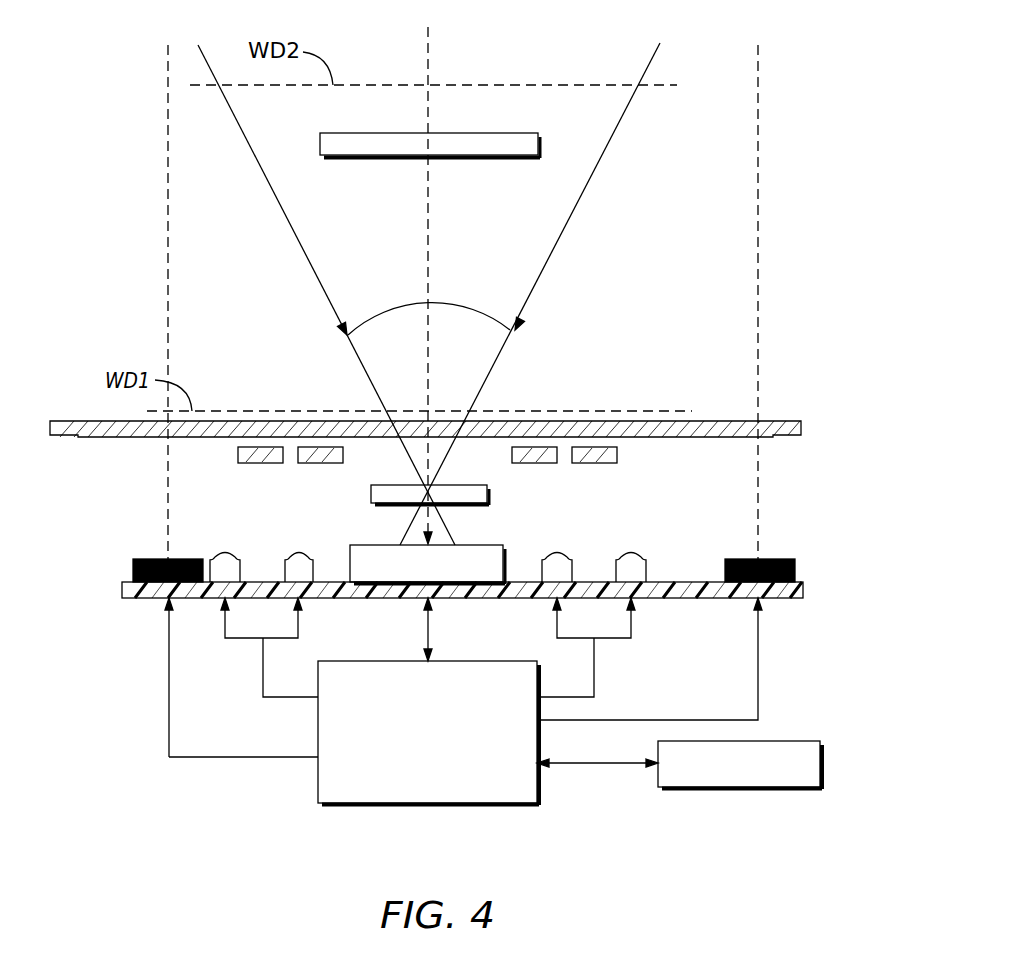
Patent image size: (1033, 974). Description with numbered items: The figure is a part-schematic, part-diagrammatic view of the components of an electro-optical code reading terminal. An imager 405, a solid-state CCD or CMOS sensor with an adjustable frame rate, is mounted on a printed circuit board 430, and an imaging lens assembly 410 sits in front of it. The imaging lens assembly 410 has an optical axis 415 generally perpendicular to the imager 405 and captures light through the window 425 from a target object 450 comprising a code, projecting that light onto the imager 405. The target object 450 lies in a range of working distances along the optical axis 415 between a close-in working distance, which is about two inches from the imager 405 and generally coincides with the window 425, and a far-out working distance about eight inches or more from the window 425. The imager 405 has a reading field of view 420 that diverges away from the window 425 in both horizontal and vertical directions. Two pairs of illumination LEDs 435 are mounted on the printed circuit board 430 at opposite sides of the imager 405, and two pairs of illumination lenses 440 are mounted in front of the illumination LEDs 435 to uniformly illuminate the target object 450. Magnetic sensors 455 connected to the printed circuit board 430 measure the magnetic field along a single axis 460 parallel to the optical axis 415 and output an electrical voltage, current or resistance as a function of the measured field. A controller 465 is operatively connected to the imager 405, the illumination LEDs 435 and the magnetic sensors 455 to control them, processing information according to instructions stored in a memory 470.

The imager 405 is at (386, 545).
The imaging lens assembly 410 is at (413, 485).
The optical axis 415 is at (428, 44).
The reading field of view 420 is at (468, 302).
The window 425 is at (68, 421).
The printed circuit board 430 is at (806, 592).
The illumination light emitting diodes 435 is at (308, 560).
The illumination lenses 440 is at (318, 447).
The target object 450 is at (375, 133).
The magnetic sensor 455 is at (150, 559).
The single axis 460 is at (168, 105).
The controller 465 is at (317, 780).
The memory 470 is at (803, 741).